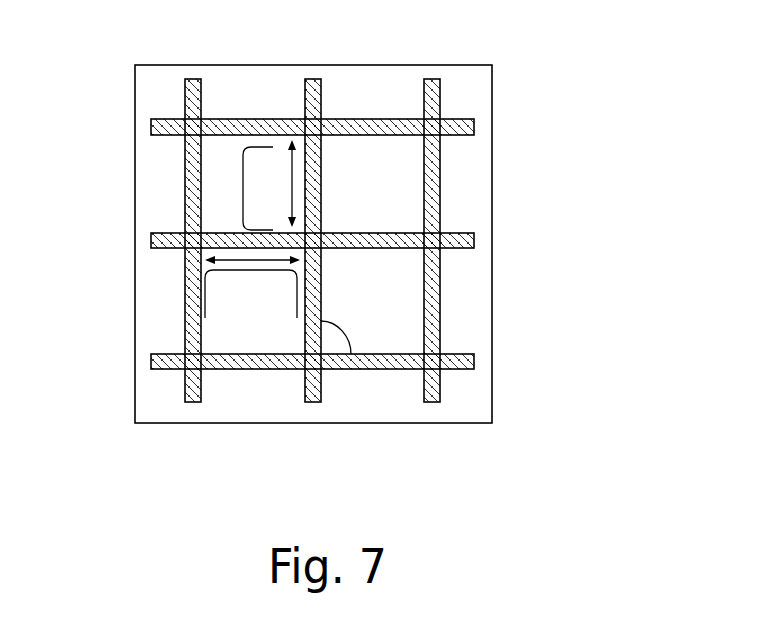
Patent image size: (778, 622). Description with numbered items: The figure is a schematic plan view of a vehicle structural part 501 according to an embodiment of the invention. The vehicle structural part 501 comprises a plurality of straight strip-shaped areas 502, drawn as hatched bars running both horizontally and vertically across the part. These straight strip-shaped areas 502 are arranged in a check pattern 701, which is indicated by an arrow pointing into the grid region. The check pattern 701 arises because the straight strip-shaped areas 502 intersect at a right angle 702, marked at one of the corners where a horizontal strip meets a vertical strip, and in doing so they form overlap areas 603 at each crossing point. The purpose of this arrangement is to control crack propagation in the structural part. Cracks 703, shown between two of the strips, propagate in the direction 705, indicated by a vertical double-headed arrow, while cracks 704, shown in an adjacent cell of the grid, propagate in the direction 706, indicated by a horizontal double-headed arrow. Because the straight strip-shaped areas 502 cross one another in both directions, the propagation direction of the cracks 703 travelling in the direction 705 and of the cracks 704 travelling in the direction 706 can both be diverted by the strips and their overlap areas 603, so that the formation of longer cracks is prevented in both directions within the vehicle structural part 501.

The vehicle structural part 501 is at (382, 80).
The straight strip-shaped areas 502 is at (247, 120).
The overlap areas 603 is at (187, 122).
The check pattern 701 is at (470, 155).
The right angle 702 is at (333, 340).
The cracks 703 is at (243, 193).
The cracks 704 is at (260, 272).
The direction 705 is at (321, 178).
The direction 706 is at (205, 272).